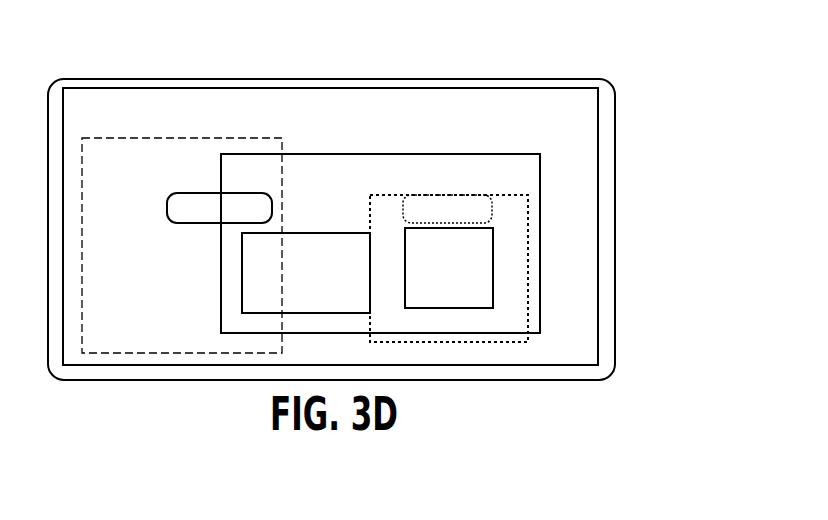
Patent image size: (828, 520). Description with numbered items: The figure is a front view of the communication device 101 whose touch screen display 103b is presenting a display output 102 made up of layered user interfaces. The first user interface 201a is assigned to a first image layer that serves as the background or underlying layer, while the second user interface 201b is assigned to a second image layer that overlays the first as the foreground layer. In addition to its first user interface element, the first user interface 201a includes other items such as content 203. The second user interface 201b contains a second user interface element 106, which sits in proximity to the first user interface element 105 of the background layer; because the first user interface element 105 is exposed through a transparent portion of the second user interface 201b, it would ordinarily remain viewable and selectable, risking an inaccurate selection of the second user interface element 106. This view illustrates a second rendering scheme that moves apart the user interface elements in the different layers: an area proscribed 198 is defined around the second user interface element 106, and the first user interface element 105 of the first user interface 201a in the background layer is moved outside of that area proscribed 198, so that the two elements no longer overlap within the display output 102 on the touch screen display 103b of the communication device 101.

The communication device 101 is at (542, 78).
The touch screen display 103b is at (97, 112).
The display output 102 is at (415, 124).
The first user interface 201a is at (128, 185).
The second user interface 201b is at (363, 183).
The first user interface element 105 is at (178, 193).
The content 203 is at (360, 264).
The area proscribed 198 is at (527, 286).
The second user interface element 106 is at (485, 288).